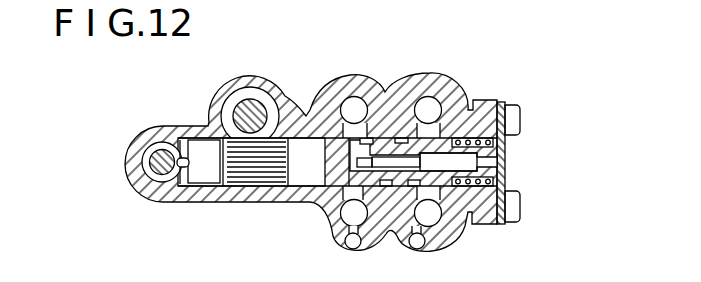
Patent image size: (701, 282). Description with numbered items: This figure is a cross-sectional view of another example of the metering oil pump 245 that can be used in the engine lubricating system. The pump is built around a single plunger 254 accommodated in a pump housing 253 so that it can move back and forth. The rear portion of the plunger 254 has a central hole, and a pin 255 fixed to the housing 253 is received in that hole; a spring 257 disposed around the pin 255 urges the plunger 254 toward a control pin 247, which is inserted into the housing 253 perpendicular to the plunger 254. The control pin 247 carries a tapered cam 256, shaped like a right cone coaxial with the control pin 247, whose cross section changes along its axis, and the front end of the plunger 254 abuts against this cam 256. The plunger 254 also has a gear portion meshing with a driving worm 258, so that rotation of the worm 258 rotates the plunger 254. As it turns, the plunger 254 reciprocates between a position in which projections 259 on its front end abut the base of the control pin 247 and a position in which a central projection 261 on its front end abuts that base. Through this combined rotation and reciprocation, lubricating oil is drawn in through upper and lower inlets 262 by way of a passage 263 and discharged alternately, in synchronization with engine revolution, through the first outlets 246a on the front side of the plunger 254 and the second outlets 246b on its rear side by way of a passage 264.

The metering oil pump 245 is at (320, 49).
The first outlets 246a is at (353, 75).
The second outlets 246b is at (443, 90).
The control pin 247 is at (147, 138).
The pump housing 253 is at (236, 187).
The plunger 254 is at (303, 172).
The pin 255 is at (470, 152).
The tapered cam 256 is at (143, 180).
The spring 257 is at (473, 163).
The driving worm 258 is at (234, 81).
The projections 259 is at (181, 184).
The central projection 261 is at (183, 156).
The inlets 262 is at (381, 234).
The passage 263 is at (386, 92).
The passage 264 is at (407, 225).